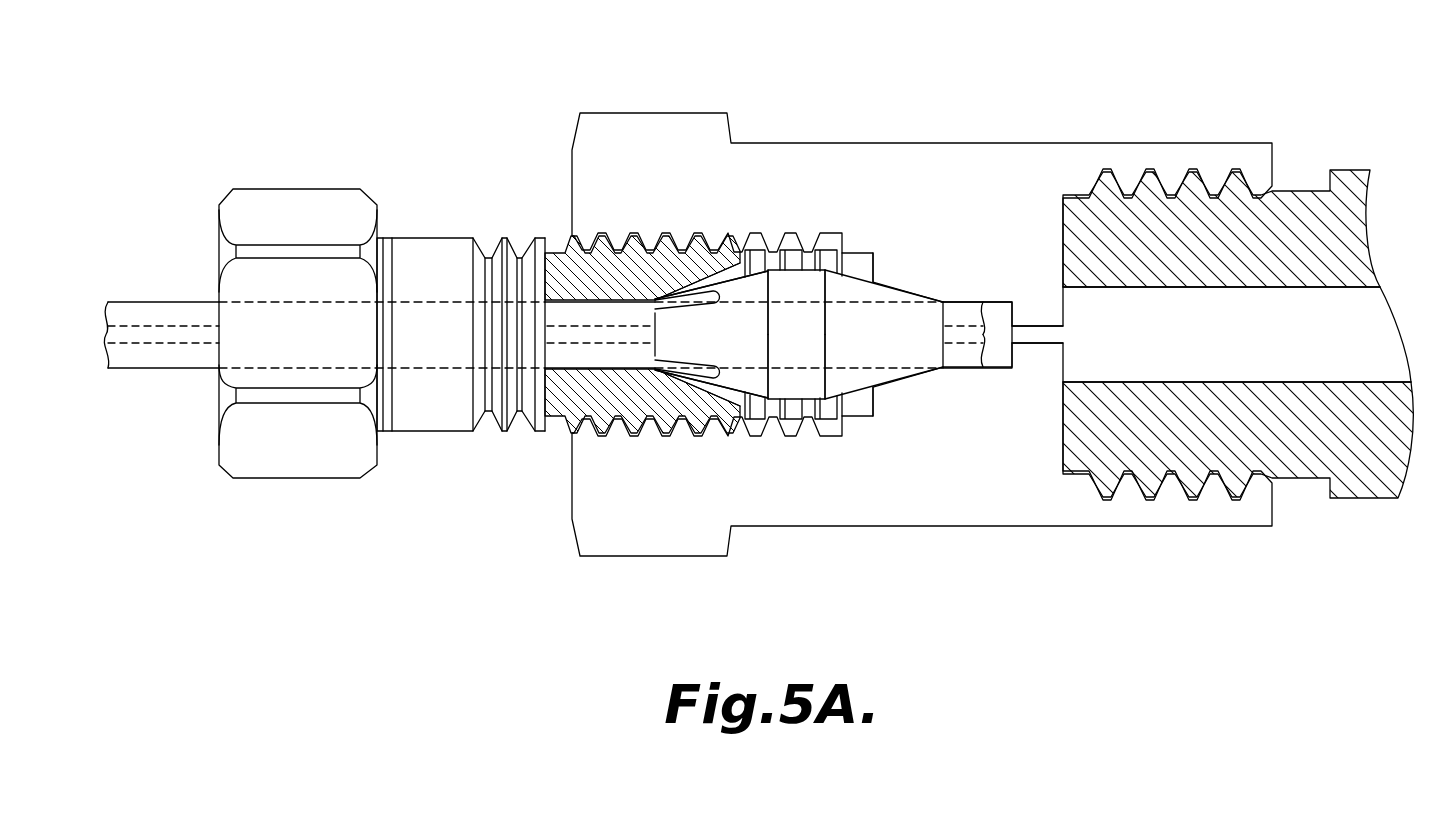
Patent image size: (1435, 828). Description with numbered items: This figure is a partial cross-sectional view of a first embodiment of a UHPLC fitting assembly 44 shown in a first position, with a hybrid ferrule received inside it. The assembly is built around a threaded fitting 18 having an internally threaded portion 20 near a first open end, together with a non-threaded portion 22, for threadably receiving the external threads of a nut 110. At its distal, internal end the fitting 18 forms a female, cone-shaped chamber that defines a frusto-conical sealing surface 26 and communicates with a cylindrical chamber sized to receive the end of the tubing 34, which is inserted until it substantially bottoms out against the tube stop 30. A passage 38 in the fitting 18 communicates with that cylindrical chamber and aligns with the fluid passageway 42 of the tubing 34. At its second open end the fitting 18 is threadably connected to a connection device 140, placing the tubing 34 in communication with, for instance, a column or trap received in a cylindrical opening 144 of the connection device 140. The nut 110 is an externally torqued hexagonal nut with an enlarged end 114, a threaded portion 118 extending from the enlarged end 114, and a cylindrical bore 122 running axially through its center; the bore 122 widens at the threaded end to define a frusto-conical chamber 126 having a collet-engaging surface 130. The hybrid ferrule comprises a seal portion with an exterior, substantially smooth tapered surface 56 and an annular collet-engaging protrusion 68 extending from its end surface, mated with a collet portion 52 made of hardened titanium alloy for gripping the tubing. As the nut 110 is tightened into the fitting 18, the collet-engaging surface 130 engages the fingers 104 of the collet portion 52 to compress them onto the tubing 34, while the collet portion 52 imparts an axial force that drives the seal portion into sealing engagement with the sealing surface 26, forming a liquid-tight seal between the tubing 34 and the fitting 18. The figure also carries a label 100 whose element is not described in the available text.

The threaded fitting 18 is at (828, 130).
The internally threaded portion 20 is at (779, 245).
The non-threaded portion 22 is at (869, 253).
The frusto-conical sealing surface 26 is at (900, 286).
The tube stop 30 is at (1013, 306).
The tubing 34 is at (165, 300).
The passage 38 is at (1050, 332).
The fluid passageway 42 is at (148, 346).
The UHPLC fitting assembly 44 is at (432, 570).
The collet portion 52 is at (758, 377).
The tapered surface 56 is at (878, 377).
The annular collet-engaging protrusion 68 is at (803, 385).
The gripping end 100 is at (652, 356).
The fingers 104 is at (690, 392).
The nut 110 is at (432, 226).
The enlarged end 114 is at (291, 197).
The threaded portion 118 is at (521, 236).
The cylindrical bore 122 is at (603, 299).
The frusto-conical chamber 126 is at (738, 388).
The collet-engaging surface 130 is at (703, 265).
The connection device 140 is at (1350, 158).
The cylindrical opening 144 is at (1334, 293).